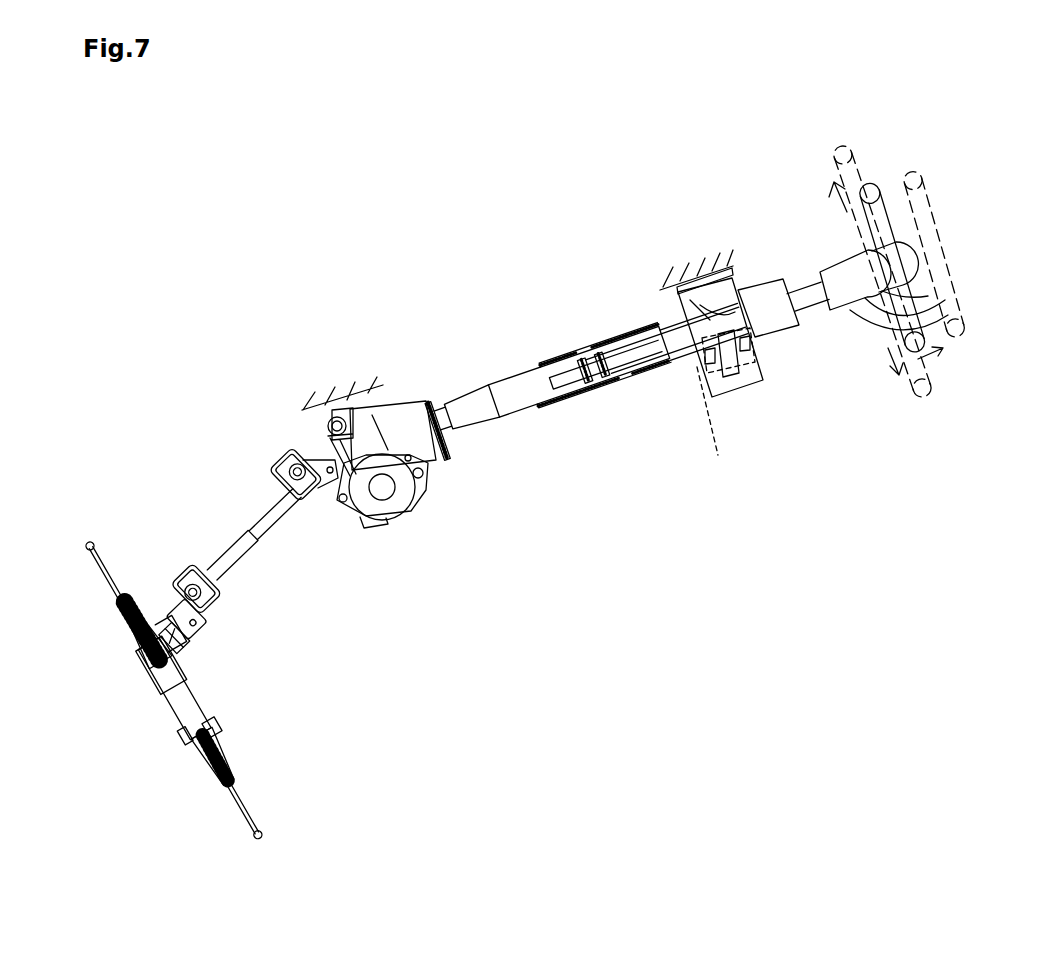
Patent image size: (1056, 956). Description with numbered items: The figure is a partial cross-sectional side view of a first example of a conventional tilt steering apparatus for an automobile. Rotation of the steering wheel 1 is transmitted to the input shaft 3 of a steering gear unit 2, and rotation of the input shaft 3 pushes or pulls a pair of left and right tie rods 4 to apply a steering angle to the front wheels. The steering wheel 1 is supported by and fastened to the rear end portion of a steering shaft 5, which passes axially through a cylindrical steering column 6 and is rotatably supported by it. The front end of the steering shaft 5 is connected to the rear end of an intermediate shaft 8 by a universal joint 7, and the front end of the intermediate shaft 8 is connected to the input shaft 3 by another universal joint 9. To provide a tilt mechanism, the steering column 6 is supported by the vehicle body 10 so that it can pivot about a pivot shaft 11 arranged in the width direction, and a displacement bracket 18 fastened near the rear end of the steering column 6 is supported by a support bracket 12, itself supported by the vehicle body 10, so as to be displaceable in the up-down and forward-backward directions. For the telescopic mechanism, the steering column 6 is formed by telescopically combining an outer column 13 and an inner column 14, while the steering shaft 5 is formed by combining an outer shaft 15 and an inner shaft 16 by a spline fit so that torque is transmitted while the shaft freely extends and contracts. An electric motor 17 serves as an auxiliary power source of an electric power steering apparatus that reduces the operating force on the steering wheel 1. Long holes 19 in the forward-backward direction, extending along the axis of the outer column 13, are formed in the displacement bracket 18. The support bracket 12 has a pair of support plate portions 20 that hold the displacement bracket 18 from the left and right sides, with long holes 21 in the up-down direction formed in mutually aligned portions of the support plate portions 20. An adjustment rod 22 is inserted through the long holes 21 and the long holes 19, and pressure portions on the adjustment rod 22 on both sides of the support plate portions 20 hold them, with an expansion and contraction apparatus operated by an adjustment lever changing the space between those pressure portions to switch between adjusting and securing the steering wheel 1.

The steering wheel 1 is at (888, 228).
The steering gear unit 2 is at (183, 707).
The input shaft 3 is at (190, 634).
The tie rods 4 is at (118, 585).
The steering shaft 5 is at (612, 378).
The steering column 6 is at (617, 338).
The universal joint 7 is at (296, 460).
The intermediate shaft 8 is at (258, 505).
The universal joint 9 is at (190, 580).
The vehicle body 10 is at (364, 398).
The pivot shaft 11 is at (337, 415).
The support bracket 12 is at (769, 372).
The outer column 13 is at (587, 347).
The inner column 14 is at (507, 380).
The outer shaft 15 is at (643, 363).
The inner shaft 16 is at (513, 396).
The electric motor 17 is at (398, 502).
The displacement bracket 18 is at (750, 327).
The long holes in the forward-backward direction 19 is at (716, 425).
The support plate portions 20 is at (702, 310).
The long holes in the up-down direction 21 is at (733, 363).
The adjustment rod 22 is at (724, 333).